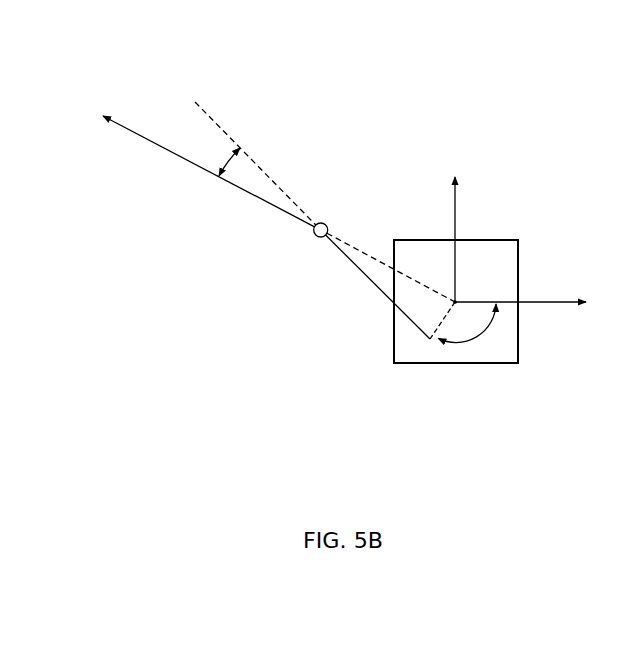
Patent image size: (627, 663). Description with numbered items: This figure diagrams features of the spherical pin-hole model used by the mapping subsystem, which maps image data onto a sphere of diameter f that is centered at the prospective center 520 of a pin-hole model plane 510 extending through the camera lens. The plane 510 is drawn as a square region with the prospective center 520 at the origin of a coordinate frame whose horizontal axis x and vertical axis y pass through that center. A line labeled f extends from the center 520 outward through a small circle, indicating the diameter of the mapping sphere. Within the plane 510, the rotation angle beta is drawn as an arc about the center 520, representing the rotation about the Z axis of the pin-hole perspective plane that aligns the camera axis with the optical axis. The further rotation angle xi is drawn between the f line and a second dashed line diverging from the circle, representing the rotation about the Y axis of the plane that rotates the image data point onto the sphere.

The pin-hole model plane 510 is at (411, 345).
The prospective center 520 is at (455, 301).
The sphere diameter f is at (272, 204).
The x axis x is at (528, 303).
The y axis y is at (454, 226).
The rotation angle ξ xi is at (222, 159).
The rotation angle β beta is at (467, 323).